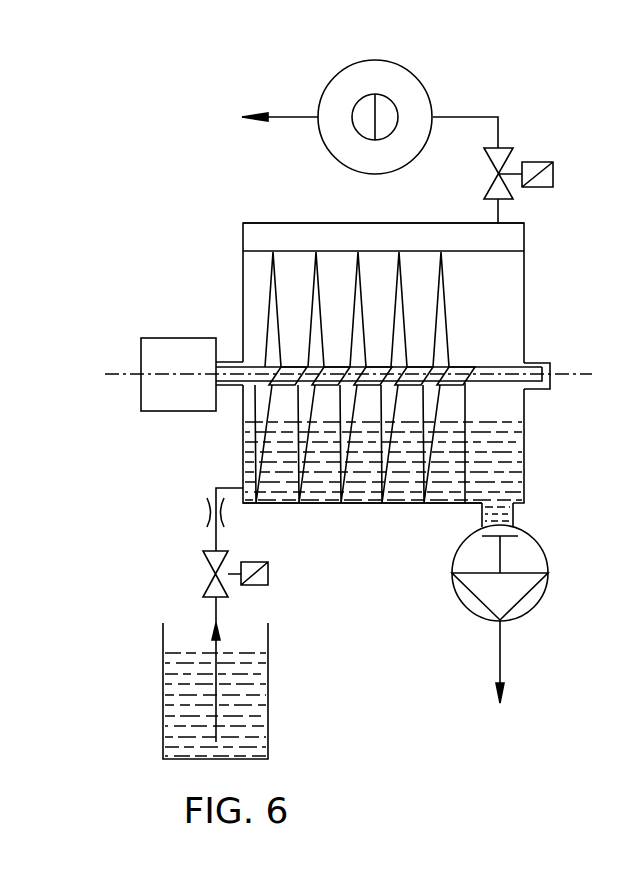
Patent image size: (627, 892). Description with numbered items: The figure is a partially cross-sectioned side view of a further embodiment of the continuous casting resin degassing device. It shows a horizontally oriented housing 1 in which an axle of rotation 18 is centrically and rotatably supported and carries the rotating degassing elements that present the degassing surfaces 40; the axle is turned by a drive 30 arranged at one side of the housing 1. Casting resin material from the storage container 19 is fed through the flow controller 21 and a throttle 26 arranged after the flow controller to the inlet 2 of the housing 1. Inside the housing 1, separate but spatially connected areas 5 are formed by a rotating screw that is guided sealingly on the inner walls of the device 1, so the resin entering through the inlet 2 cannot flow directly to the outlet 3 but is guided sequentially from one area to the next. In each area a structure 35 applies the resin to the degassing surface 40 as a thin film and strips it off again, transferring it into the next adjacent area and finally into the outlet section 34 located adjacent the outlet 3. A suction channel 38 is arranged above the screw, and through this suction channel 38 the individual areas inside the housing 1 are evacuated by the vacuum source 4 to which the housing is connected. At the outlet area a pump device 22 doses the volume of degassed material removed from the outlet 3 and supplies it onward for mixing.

The housing 1 is at (525, 318).
The inlet 2 is at (220, 488).
The outlet 3 is at (513, 513).
The vacuum source 4 is at (393, 72).
The areas 5 is at (403, 487).
The axle of rotation 18 is at (527, 370).
The storage container 19 is at (265, 718).
The flow controller 21 is at (207, 587).
The pump device 22 is at (543, 595).
The throttle 26 is at (220, 513).
The motor 30 is at (150, 355).
The outlet section 34 is at (518, 452).
The structure for applying casting resin / stripping structure 35 is at (465, 405).
The suction channel 38 is at (513, 237).
The degassing surface 40 is at (292, 273).